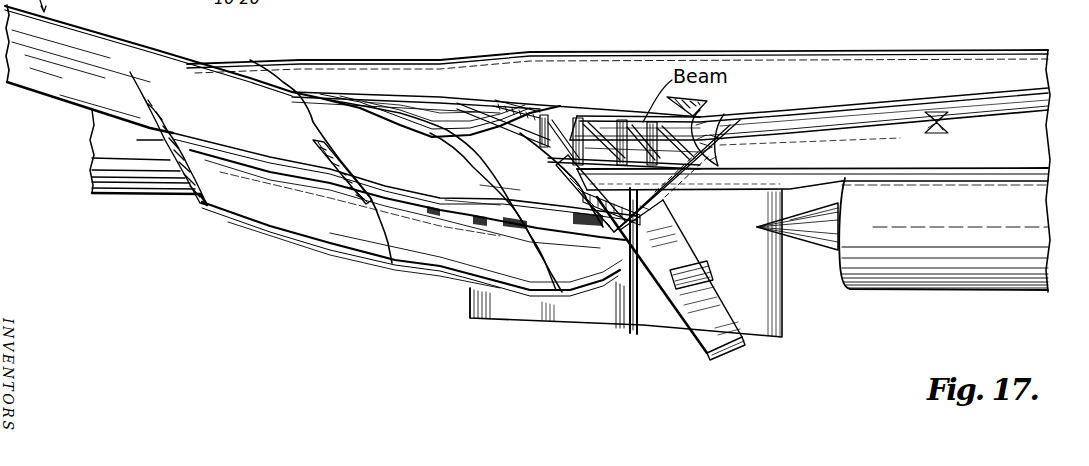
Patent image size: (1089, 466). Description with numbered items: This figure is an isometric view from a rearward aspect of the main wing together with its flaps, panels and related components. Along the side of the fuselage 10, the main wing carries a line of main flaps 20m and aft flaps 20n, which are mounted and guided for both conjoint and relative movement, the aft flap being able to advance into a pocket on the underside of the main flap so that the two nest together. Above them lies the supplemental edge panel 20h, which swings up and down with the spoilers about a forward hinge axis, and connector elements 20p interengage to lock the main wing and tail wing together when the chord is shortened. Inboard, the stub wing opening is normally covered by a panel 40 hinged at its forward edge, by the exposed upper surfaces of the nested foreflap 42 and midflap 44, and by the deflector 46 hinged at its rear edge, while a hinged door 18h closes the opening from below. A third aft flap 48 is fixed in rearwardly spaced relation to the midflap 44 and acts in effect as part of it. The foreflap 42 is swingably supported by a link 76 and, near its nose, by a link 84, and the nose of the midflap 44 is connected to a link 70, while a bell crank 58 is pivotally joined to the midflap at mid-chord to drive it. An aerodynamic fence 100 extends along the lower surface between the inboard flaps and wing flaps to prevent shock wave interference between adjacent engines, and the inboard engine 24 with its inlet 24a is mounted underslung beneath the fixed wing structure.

The fuselage 10 is at (904, 47).
The main flap 20m is at (230, 100).
The supplemental edge panel 20h is at (397, 113).
The aft flap 20n is at (417, 253).
The connector element 20p is at (348, 158).
The panel 40 is at (527, 116).
The link 84 is at (552, 123).
The link 76 is at (594, 125).
The link 70 is at (607, 124).
The deflector 46 is at (715, 104).
The foreflap 42 is at (555, 173).
The aerodynamic fence 100 is at (790, 180).
The bell crank 58 is at (703, 165).
The hinged door 18h is at (612, 320).
The midflap 44 is at (688, 253).
The aft flap 48 is at (722, 340).
The inlet 24a is at (838, 265).
The inboard engine 24 is at (956, 270).